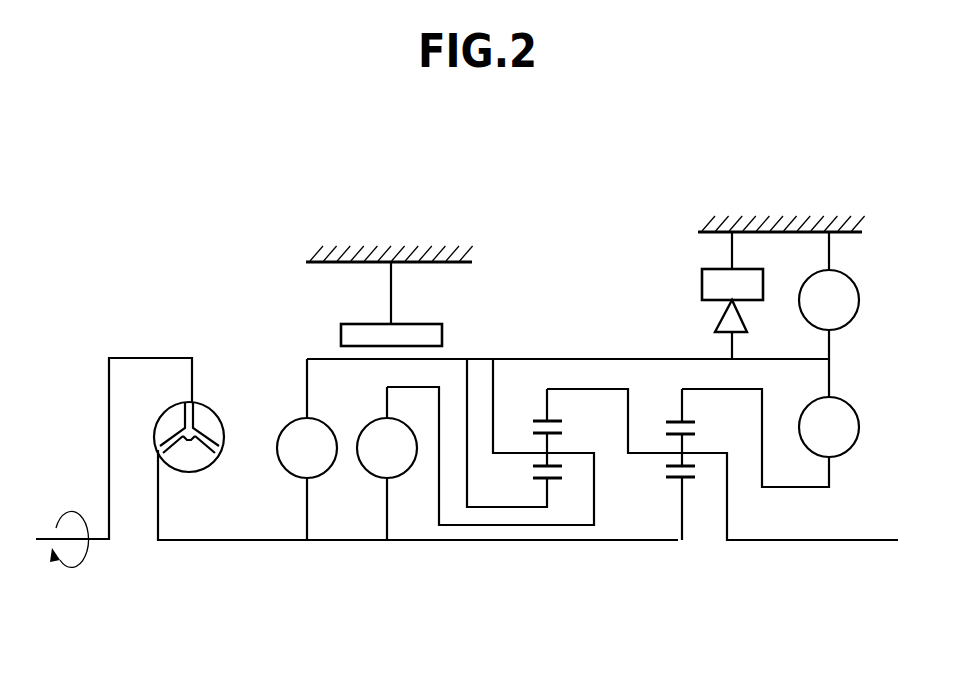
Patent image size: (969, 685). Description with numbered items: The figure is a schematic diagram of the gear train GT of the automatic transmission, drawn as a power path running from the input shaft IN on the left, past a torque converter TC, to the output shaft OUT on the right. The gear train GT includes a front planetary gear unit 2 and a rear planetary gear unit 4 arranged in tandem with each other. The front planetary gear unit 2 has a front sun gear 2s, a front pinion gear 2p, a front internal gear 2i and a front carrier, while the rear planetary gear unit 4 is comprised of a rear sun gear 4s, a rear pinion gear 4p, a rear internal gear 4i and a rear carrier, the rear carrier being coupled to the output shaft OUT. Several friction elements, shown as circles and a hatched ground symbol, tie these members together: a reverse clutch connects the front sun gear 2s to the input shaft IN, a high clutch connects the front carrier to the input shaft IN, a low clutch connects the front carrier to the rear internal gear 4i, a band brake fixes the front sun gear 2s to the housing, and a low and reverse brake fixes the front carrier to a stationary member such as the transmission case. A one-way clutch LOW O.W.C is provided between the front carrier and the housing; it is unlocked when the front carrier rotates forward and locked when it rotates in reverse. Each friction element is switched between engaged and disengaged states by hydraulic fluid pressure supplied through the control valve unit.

The input shaft IN is at (257, 540).
The output shaft OUT is at (817, 541).
The torque converter TC is at (209, 397).
The gear train GT is at (572, 238).
The front planetary gear unit 2 is at (527, 491).
The front internal gear 2i is at (537, 420).
The front pinion gear 2p is at (562, 443).
The front sun gear 2s is at (525, 476).
The rear planetary gear unit 4 is at (700, 493).
The rear internal gear 4i is at (670, 421).
The rear pinion gear 4p is at (696, 441).
The rear sun gear 4s is at (658, 476).
The one-way clutch LOW O.W.C is at (702, 286).